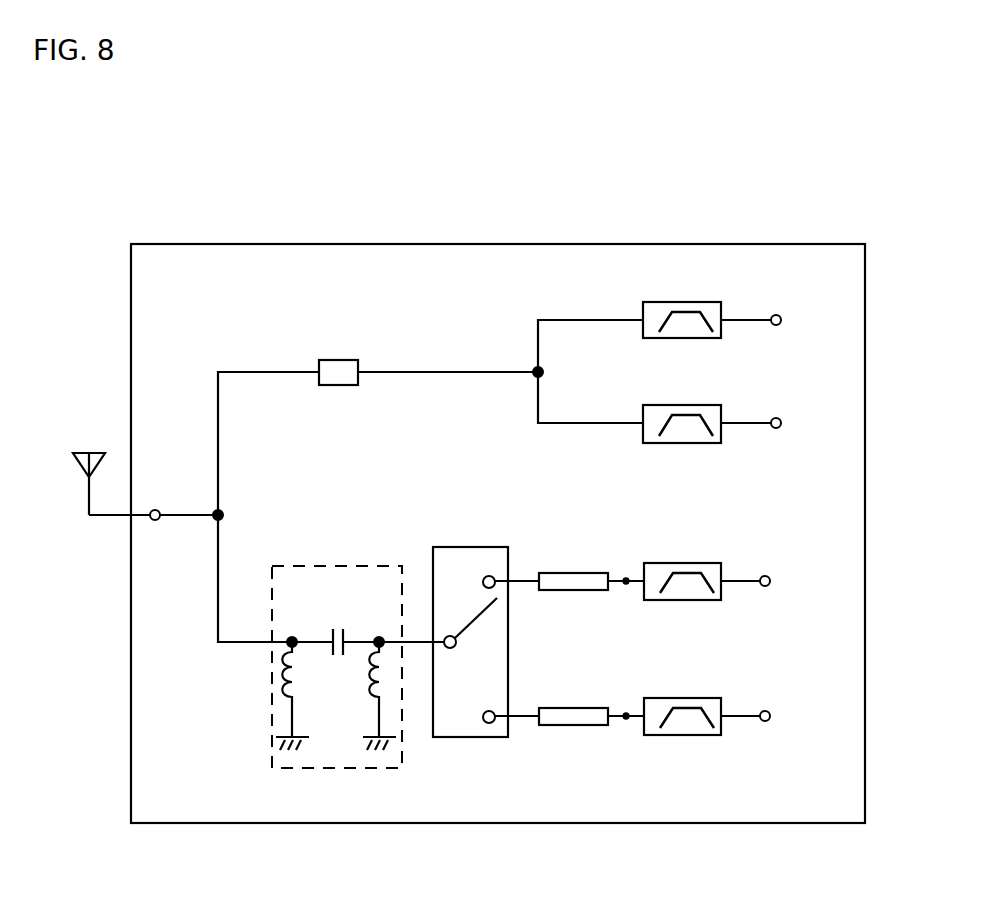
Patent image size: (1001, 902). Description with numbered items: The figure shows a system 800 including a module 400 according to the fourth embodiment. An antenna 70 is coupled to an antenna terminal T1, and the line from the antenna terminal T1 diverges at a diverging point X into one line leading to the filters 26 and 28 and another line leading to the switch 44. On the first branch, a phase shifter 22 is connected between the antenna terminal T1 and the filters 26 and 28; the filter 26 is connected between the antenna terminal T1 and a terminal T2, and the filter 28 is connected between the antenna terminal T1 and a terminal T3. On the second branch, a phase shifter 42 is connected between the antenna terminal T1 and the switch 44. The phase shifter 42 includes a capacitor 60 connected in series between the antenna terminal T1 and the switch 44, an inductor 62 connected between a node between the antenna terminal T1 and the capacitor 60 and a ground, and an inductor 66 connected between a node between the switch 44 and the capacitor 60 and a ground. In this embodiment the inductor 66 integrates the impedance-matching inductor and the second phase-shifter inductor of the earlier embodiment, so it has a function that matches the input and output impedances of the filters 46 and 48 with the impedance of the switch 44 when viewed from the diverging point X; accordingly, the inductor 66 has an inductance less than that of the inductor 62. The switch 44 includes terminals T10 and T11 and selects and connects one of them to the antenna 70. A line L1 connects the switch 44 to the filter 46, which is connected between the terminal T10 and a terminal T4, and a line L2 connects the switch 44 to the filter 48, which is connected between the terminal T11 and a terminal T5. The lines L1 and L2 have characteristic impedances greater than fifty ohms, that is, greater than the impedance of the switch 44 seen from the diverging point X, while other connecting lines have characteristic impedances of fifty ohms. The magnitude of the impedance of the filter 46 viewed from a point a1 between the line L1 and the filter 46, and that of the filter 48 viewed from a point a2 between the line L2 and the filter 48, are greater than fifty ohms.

The system 800 is at (768, 209).
The module 400 is at (550, 244).
The antenna 70 is at (93, 453).
The antenna terminal T1 is at (155, 510).
The diverging point X is at (223, 514).
The phase shifter 22 is at (346, 360).
The filter 26 is at (708, 302).
The filter 28 is at (708, 405).
The terminal T2 is at (782, 320).
The terminal T3 is at (782, 423).
The phase shifter 42 is at (357, 566).
The capacitor 60 is at (338, 628).
The inductor 62 is at (302, 674).
The inductor 66 is at (370, 688).
The switch 44 is at (465, 737).
The terminal T10 is at (483, 571).
The terminal T11 is at (483, 706).
The line L1 is at (567, 573).
The line L2 is at (567, 708).
The point a1 is at (626, 578).
The point a2 is at (626, 713).
The filter 46 is at (708, 563).
The filter 48 is at (708, 698).
The terminal T4 is at (771, 581).
The terminal T5 is at (771, 716).